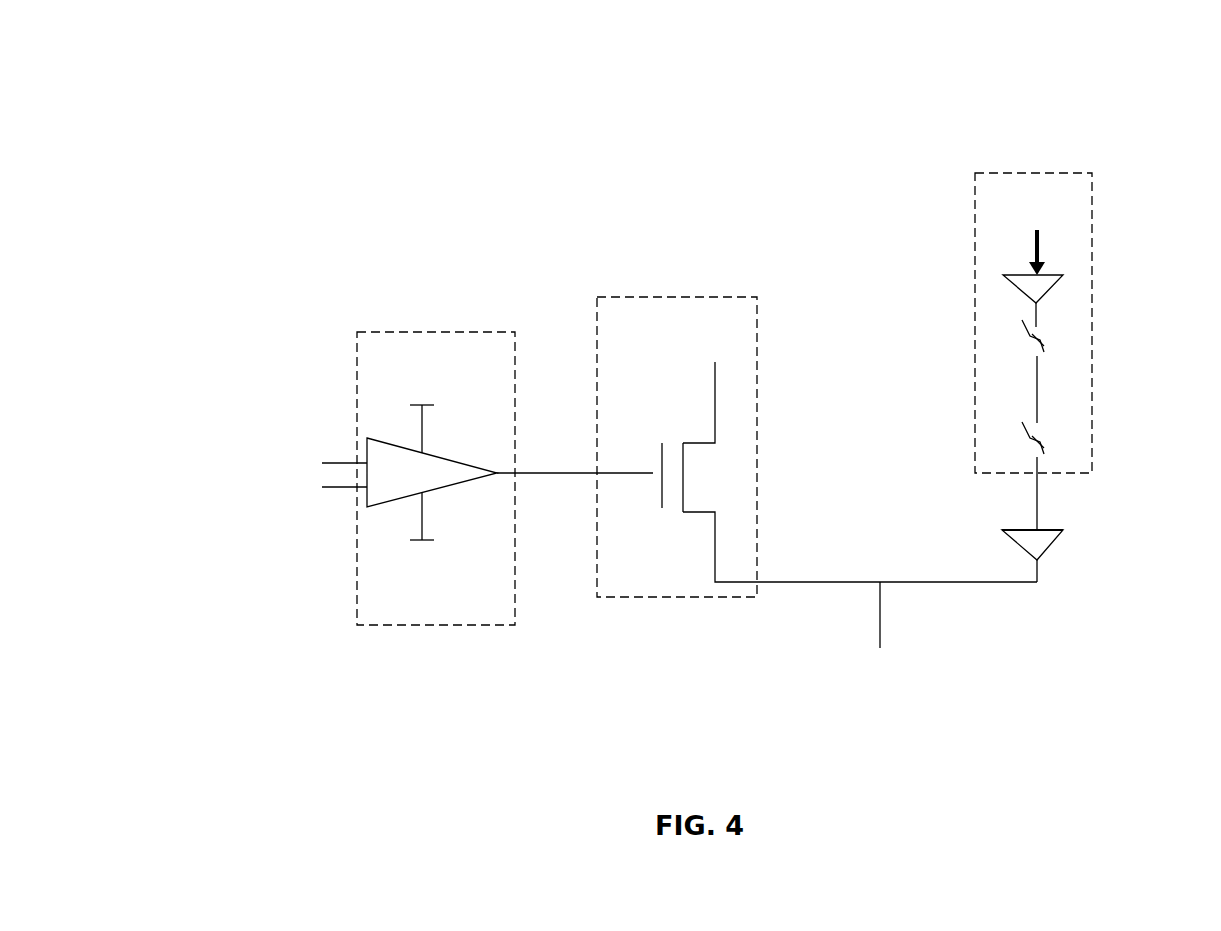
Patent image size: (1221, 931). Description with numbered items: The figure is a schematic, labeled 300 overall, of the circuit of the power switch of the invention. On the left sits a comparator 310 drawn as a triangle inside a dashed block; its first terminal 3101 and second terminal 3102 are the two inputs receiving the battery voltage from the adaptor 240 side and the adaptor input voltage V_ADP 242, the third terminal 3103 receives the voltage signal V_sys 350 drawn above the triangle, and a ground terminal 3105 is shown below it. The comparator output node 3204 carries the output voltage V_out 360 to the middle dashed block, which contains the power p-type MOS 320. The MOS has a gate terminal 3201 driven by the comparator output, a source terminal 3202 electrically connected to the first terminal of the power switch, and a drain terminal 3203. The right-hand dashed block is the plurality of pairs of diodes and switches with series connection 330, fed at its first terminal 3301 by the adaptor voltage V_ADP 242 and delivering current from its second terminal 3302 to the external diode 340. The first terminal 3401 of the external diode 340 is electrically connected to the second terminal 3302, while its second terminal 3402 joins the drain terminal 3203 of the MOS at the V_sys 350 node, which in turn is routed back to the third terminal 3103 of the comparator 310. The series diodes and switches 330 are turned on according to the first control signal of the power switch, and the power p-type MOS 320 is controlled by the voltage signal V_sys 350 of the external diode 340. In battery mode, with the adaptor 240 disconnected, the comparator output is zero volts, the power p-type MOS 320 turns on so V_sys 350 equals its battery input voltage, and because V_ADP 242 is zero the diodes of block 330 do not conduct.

The charging circuit 300 is at (182, 112).
The adaptor 240 is at (255, 440).
The input voltage V_ADP 242 is at (255, 503).
The comparator 310 is at (487, 635).
The first terminal 3101 is at (343, 495).
The second terminal 3102 is at (345, 450).
The third terminal 3103 is at (432, 440).
The ground terminal 3105 is at (427, 590).
The voltage signal V_sys 350 is at (428, 355).
The comparator output node 3204 is at (503, 468).
The output voltage V_out 360 is at (533, 535).
The power p-type MOS 320 is at (755, 600).
The gate terminal 3201 is at (652, 480).
The source terminal 3202 is at (725, 512).
The drain terminal 3203 is at (725, 440).
The plurality of pairs of diodes and switches with series connection 330 is at (1100, 372).
The first terminal 3301 is at (1005, 270).
The second terminal 3302 is at (1022, 478).
The external diode 340 is at (1040, 562).
The first terminal 3401 is at (1045, 525).
The second terminal 3402 is at (1020, 578).